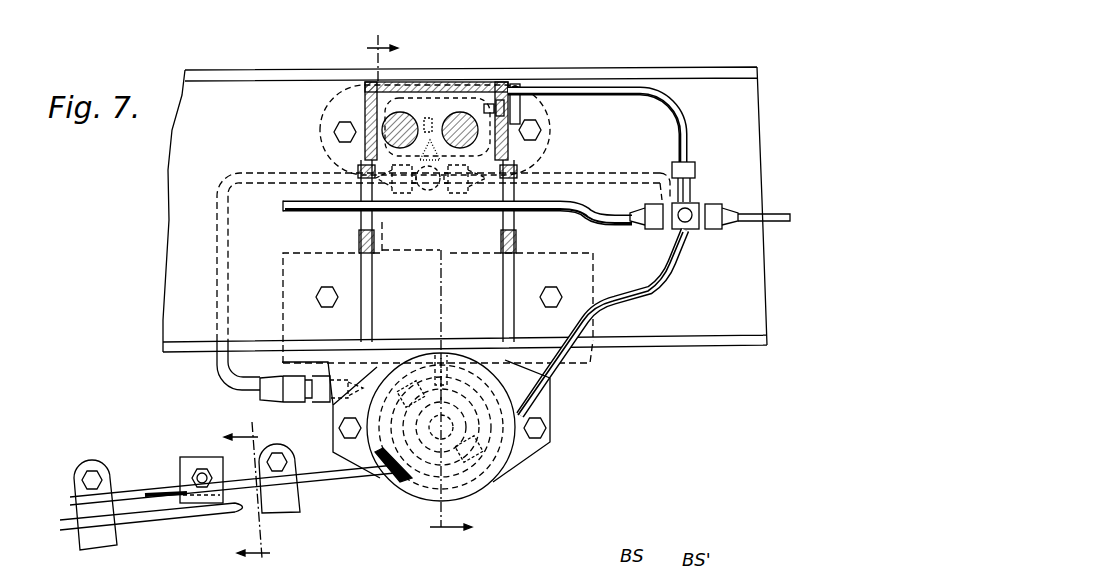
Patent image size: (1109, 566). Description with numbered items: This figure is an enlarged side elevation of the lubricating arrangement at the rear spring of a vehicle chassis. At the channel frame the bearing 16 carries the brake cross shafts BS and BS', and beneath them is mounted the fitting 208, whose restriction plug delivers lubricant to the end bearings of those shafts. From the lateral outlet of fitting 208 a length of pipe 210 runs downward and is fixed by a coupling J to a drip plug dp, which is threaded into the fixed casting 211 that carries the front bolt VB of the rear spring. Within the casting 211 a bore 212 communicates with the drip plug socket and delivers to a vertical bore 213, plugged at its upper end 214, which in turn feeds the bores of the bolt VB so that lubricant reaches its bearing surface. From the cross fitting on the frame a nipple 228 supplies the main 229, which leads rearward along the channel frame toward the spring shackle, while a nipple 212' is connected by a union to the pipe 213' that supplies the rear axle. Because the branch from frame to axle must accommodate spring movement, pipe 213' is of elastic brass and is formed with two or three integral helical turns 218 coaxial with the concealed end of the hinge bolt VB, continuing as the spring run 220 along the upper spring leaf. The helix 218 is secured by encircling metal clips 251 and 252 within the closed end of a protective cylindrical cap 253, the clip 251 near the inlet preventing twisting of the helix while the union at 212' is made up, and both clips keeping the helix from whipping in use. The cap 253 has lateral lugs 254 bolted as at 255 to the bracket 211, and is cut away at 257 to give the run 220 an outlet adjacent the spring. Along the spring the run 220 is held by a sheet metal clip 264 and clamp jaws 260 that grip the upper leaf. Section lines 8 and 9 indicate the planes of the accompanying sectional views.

The section line 8- 8 is at (419, 286).
The section line 9- 9 is at (247, 480).
The bearing 16 is at (465, 209).
The brake cross shaft BS is at (421, 85).
The brake cross shaft BS' is at (491, 85).
The fitting 208 is at (428, 187).
The pipe 210 is at (215, 370).
The casting 211 is at (342, 352).
The bore 212 is at (308, 422).
The nipple 212' is at (705, 220).
The vertical bore 213 is at (581, 226).
The pipe 213' is at (624, 322).
The upper end of vertical bore 214 is at (445, 363).
The helical turns 218 is at (485, 385).
The spring run 220 is at (163, 492).
The nipple 228 is at (657, 233).
The main 229 is at (567, 208).
The clip 251 is at (480, 473).
The clip 252 is at (408, 352).
The cap 253 is at (480, 405).
The lateral lugs 254 is at (527, 443).
The bolts 255 is at (553, 420).
The cut-away 257 is at (378, 482).
The clamp jaw 260 is at (203, 457).
The sheet metal clip 264 is at (217, 498).
The front bolt VB is at (417, 483).
The coupling J is at (268, 386).
The drip plug dp is at (285, 362).